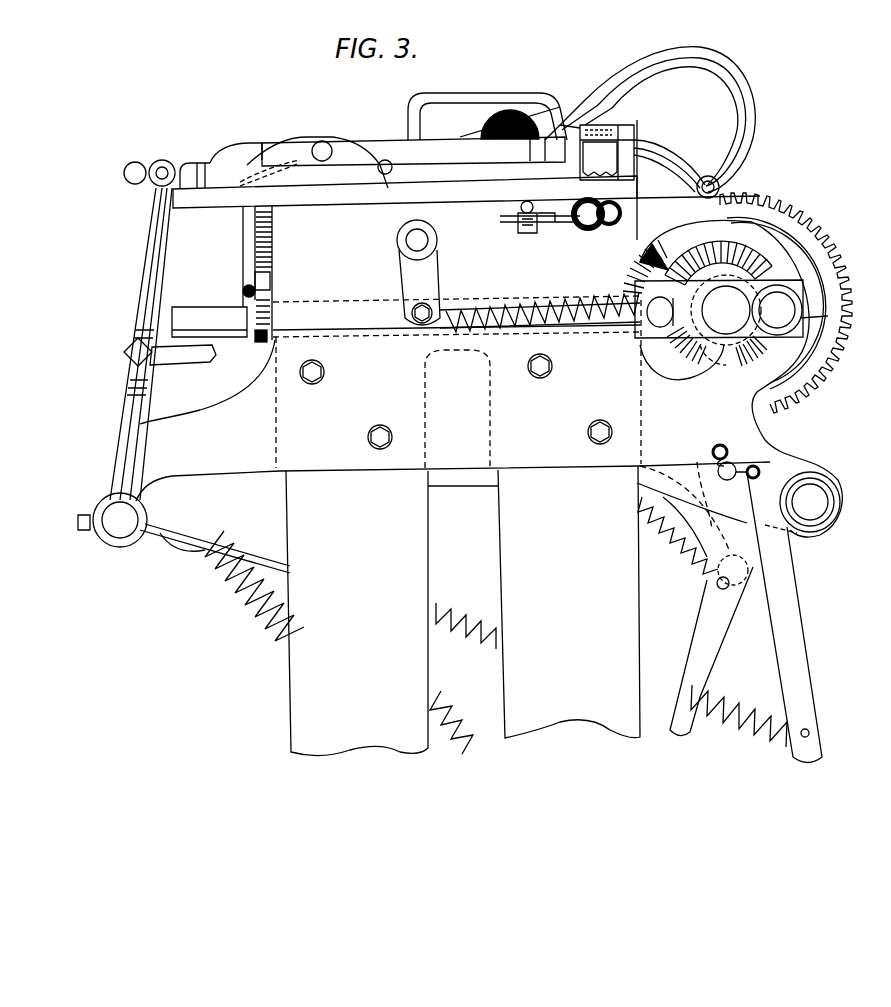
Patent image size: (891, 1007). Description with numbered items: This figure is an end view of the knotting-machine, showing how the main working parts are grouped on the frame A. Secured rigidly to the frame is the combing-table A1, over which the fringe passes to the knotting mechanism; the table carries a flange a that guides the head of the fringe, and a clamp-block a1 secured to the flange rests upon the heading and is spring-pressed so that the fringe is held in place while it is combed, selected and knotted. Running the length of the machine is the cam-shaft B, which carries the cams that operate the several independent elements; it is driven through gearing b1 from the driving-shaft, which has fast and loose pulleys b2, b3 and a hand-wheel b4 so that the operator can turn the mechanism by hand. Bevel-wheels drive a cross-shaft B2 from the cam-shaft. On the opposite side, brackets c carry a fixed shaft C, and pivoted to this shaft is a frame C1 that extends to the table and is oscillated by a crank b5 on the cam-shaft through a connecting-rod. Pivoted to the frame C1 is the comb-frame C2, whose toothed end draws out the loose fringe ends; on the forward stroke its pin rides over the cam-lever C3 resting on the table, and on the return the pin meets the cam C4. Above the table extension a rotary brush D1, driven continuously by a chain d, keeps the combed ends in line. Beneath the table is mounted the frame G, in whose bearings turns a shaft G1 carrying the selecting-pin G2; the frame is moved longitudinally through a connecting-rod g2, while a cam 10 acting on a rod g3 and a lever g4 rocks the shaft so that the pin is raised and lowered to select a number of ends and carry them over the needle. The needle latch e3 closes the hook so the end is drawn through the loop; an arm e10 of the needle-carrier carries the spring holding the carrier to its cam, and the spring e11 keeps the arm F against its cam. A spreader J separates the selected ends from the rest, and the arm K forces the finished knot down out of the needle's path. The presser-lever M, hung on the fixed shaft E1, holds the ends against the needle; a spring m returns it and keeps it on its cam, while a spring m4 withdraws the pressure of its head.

The frame A is at (489, 489).
The combing-table A1 is at (338, 206).
The cam-shaft B is at (719, 310).
The cross-shaft B2 is at (209, 322).
The fixed shaft C is at (120, 530).
The frame C1 is at (163, 330).
The comb-frame C2 is at (387, 151).
The cam-lever C3 is at (300, 142).
The cam C4 is at (240, 175).
The rotary brush D1 is at (492, 128).
The fixed shaft E1 is at (810, 502).
The frame G is at (470, 214).
The shaft G1 is at (417, 240).
The selecting-pin G2 is at (487, 107).
The spreader J is at (661, 132).
The arm K is at (650, 119).
The presser-lever M is at (784, 618).
The flange a is at (597, 152).
The clamp-block a1 is at (600, 159).
The gearing b1 is at (786, 303).
The fast pulley b2 is at (668, 258).
The loose pulley b3 is at (776, 272).
The hand-wheel b4 is at (645, 147).
The crank b5 is at (742, 358).
The bracket c is at (207, 391).
The chain d is at (233, 250).
The latch e3 is at (252, 586).
The arm e10 is at (711, 645).
The spring e11 is at (712, 622).
The connecting-rod g2 is at (535, 232).
The rod g3 is at (470, 308).
The lever g4 is at (419, 287).
The spring m is at (460, 606).
The spring m4 is at (735, 470).
The cam 10 is at (681, 312).